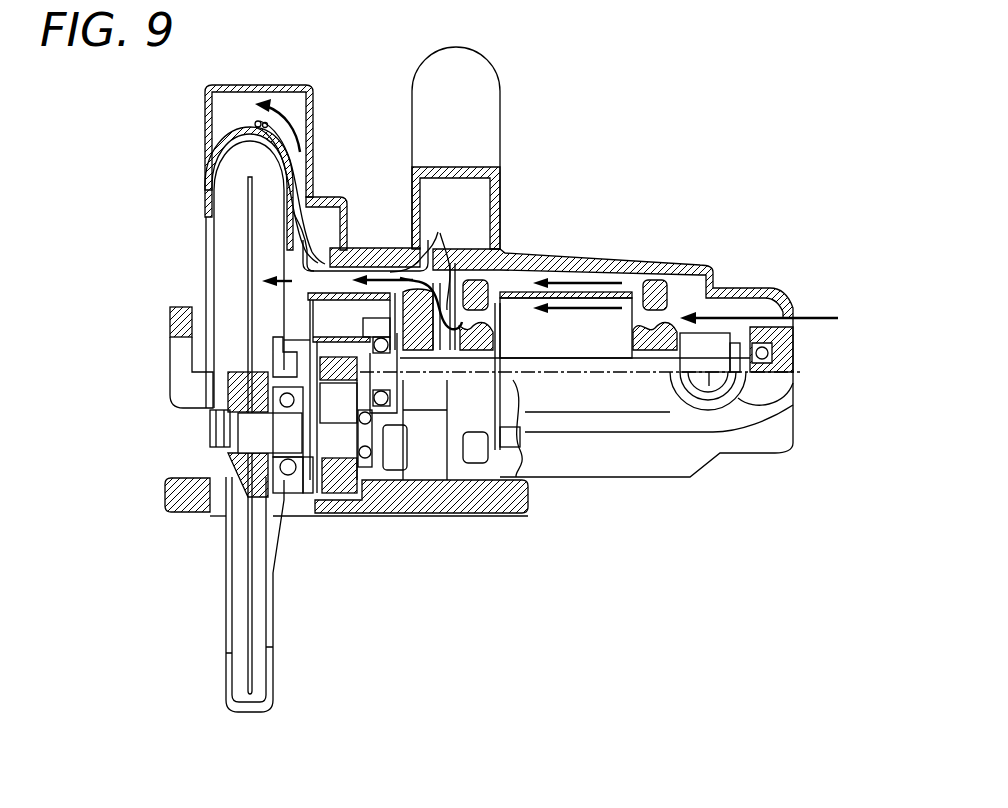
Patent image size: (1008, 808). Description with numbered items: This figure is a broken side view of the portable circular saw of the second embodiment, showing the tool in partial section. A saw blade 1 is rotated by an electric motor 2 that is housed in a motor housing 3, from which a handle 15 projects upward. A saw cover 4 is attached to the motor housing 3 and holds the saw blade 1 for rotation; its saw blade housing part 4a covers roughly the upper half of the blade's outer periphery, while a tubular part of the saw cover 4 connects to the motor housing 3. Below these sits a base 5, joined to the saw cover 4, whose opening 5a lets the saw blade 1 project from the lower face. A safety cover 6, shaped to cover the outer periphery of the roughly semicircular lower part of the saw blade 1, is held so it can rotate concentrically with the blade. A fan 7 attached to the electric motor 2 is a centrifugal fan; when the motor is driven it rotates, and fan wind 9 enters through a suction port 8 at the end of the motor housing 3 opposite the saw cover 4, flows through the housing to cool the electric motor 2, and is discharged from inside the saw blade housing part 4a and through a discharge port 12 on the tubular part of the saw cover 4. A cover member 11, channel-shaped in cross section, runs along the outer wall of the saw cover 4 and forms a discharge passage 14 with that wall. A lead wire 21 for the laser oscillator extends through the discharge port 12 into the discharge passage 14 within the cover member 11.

The saw blade 1 is at (266, 648).
The electric motor 2 is at (592, 353).
The motor housing 3 is at (688, 265).
The saw cover 4 is at (375, 260).
The saw blade housing part 4a is at (208, 184).
The base 5 is at (402, 504).
The opening 5a is at (218, 512).
The safety cover 6 is at (225, 677).
The fan 7 is at (428, 443).
The suction port 8 is at (793, 322).
The fan wind 9 is at (283, 100).
The cover member 11 is at (212, 90).
The discharge port 12 is at (320, 237).
The discharge passage 14 is at (226, 120).
The handle 15 is at (480, 93).
The lead wire 21 is at (288, 238).